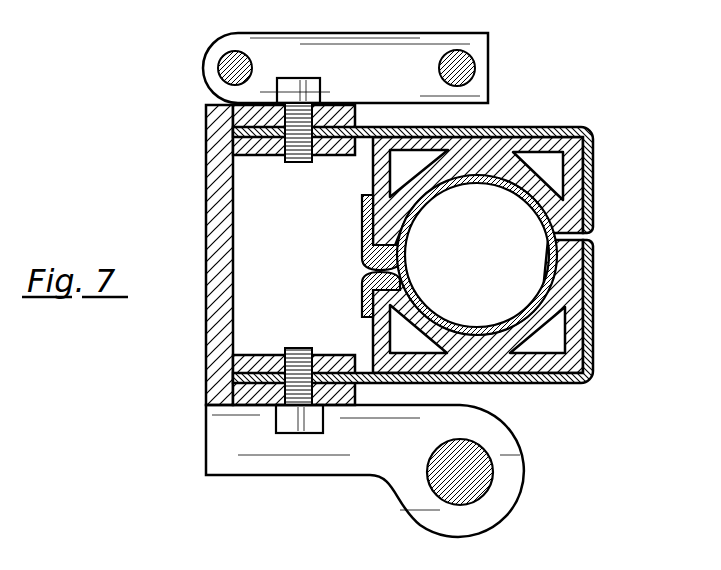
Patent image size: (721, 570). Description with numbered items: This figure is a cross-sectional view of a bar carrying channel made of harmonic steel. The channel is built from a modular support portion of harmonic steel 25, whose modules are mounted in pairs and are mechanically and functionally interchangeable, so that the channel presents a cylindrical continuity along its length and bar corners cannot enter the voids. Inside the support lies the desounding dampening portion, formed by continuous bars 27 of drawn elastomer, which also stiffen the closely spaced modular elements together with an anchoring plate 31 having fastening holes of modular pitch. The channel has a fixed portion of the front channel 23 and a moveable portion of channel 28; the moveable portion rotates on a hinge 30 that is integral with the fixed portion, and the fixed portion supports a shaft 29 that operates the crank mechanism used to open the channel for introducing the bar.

The fixed portion of the front channel 23 is at (257, 462).
The modular support portion of harmonic steel 25 is at (593, 163).
The continuous bars of drawn elastomer 27 is at (573, 302).
The moveable portion of channel 28 is at (488, 50).
The shaft 29 is at (484, 468).
The hinge 30 is at (221, 63).
The anchoring plate 31 is at (263, 146).